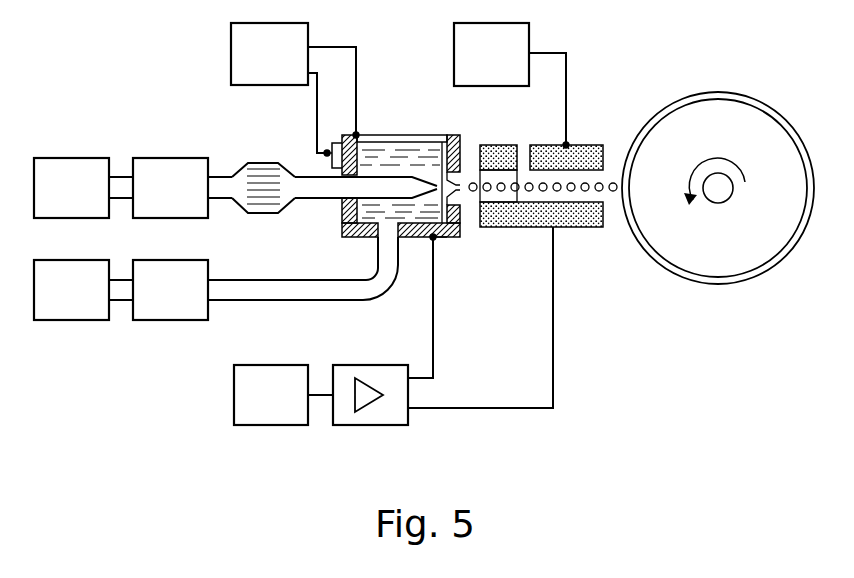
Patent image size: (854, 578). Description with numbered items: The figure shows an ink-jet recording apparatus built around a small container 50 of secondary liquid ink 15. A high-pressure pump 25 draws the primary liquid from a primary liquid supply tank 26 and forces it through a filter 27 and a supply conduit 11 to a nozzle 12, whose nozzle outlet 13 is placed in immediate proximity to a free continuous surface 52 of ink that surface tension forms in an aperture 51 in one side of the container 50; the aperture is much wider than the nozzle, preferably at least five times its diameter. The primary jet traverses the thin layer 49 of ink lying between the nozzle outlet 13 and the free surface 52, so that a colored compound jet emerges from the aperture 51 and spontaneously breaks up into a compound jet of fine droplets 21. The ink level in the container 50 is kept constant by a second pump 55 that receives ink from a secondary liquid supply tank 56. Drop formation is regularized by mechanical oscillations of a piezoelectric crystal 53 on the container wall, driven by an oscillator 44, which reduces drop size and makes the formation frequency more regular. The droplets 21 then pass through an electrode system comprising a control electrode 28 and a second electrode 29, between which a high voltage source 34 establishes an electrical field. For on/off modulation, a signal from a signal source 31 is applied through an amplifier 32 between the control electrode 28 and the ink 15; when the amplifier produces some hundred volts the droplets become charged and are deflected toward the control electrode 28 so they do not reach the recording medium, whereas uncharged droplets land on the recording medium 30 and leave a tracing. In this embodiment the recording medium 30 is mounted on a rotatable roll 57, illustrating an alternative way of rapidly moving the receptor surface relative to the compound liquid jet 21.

The primary fluid supply conduit 11 is at (320, 190).
The nozzle 12 is at (416, 175).
The nozzle outlet 13 is at (427, 243).
The ink 15 is at (393, 157).
The compound jet of fine droplets 21 is at (598, 195).
The high-pressure pump 25 is at (182, 200).
The primary liquid supply tank 26 is at (83, 200).
The filter 27 is at (263, 203).
The control electrode 28 is at (530, 230).
The electrode 29 is at (588, 145).
The recording medium 30 is at (708, 92).
The signal source 31 is at (283, 407).
The amplifier 32 is at (377, 417).
The high voltage source 34 is at (504, 64).
The oscillator 44 is at (282, 64).
The thin layer of secondary liquid 49 is at (443, 225).
The container 50 is at (447, 240).
The aperture 51 is at (463, 150).
The free continuous surface 52 is at (460, 208).
The piezoelectric crystal 53 is at (322, 160).
The pump 55 is at (182, 302).
The secondary liquid supply tank 56 is at (83, 302).
The rotatable roll 57 is at (750, 115).